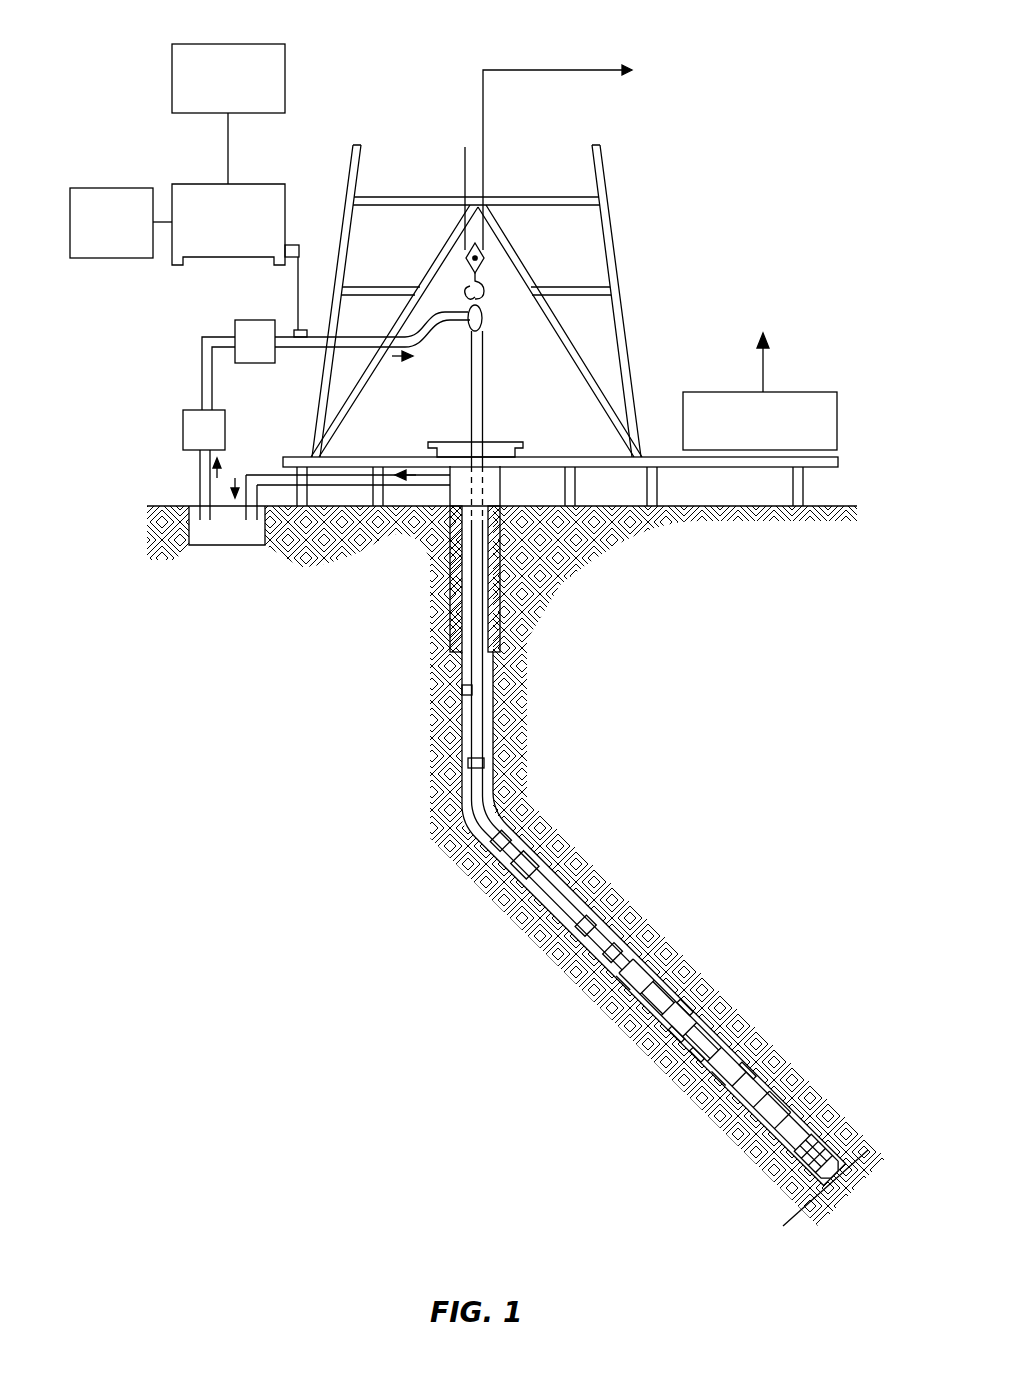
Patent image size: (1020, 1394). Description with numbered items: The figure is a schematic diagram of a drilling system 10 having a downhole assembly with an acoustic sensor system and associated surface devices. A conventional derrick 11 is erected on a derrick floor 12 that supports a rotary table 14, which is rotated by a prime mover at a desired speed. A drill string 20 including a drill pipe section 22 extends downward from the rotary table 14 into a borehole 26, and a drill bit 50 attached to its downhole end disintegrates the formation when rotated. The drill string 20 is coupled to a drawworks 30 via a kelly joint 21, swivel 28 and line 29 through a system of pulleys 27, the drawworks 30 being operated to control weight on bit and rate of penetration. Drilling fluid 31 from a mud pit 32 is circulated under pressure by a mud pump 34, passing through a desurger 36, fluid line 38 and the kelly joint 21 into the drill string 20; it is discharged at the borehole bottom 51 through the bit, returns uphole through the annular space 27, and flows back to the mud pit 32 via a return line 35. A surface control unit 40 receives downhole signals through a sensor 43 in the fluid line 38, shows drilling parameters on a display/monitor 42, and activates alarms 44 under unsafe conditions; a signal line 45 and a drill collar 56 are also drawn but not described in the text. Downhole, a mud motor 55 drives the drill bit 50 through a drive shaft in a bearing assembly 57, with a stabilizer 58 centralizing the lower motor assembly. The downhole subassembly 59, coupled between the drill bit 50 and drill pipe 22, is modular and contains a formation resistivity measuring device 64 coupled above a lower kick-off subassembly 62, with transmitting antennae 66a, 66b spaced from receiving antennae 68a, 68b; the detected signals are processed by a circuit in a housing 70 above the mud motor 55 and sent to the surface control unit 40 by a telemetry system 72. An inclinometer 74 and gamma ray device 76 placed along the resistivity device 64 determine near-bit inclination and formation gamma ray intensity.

The drilling system 10 is at (126, 38).
The derrick 11 is at (622, 300).
The derrick floor 12 is at (650, 457).
The rotary table 14 is at (507, 442).
The drill string 20 is at (495, 733).
The kelly joint 21 is at (482, 368).
The drill pipe section 22 is at (462, 722).
The borehole 26 is at (505, 818).
The annular space 27 is at (516, 850).
The swivel 28 is at (482, 318).
The line 29 is at (483, 170).
The drawworks 30 is at (803, 392).
The drilling fluid 31 is at (197, 537).
The mud pit 32 is at (223, 545).
The mud pump 34 is at (192, 410).
The return line 35 is at (350, 498).
The desurger 36 is at (247, 320).
The fluid line 38 is at (303, 348).
The surface control unit 40 is at (177, 184).
The display/monitor 42 is at (260, 44).
The sensor 43 is at (300, 330).
The alarms 44 is at (108, 258).
The signal line 45 is at (298, 257).
The drill bit 50 is at (831, 1156).
The borehole bottom 51 is at (770, 1228).
The mud motor 55 is at (577, 898).
The drill collar 56 is at (617, 935).
The bearing assembly 57 is at (758, 1135).
The stabilizer 58 is at (791, 1115).
The downhole subassembly 59 is at (637, 830).
The lower kick-off subassembly 62 is at (781, 1095).
The formation resistivity measuring device 64 is at (690, 1063).
The transmitting antenna 66a is at (605, 998).
The transmitting antenna 66b is at (711, 1090).
The receiving antenna 68a is at (670, 1040).
The receiving antenna 68b is at (682, 1005).
The housing 70 is at (492, 866).
The telemetry system 72 is at (473, 805).
The inclinometer 74 is at (697, 1045).
The gamma ray device 76 is at (751, 1075).